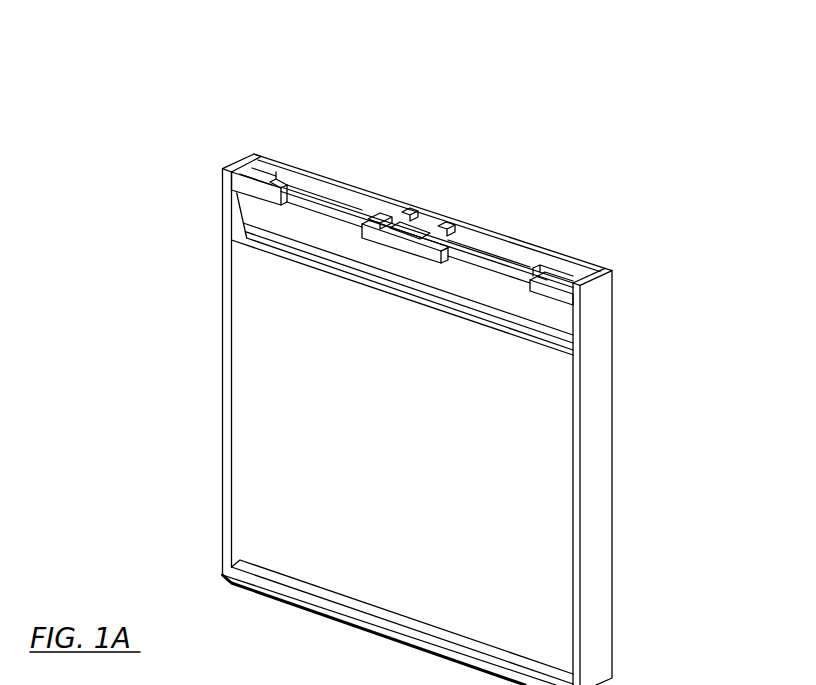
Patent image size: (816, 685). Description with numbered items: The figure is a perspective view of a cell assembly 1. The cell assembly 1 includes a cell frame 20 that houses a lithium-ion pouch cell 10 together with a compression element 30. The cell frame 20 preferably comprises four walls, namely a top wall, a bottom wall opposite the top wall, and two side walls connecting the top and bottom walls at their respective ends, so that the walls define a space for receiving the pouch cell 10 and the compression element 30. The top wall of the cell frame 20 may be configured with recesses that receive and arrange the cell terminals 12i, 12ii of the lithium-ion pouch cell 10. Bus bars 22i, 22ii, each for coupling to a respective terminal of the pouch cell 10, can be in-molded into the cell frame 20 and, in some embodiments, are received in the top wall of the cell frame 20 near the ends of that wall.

The cell assembly 1 is at (180, 148).
The lithium-ion pouch cell 10 is at (283, 213).
The cell terminal 12i is at (335, 192).
The cell terminal 12ii is at (500, 260).
The cell frame 20 is at (593, 431).
The bus bar 22i is at (254, 163).
The bus bar 22ii is at (572, 272).
The compression element 30 is at (556, 550).